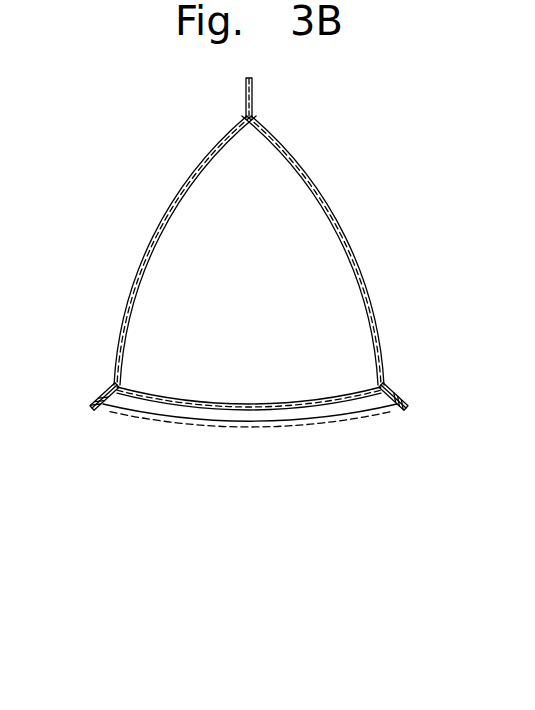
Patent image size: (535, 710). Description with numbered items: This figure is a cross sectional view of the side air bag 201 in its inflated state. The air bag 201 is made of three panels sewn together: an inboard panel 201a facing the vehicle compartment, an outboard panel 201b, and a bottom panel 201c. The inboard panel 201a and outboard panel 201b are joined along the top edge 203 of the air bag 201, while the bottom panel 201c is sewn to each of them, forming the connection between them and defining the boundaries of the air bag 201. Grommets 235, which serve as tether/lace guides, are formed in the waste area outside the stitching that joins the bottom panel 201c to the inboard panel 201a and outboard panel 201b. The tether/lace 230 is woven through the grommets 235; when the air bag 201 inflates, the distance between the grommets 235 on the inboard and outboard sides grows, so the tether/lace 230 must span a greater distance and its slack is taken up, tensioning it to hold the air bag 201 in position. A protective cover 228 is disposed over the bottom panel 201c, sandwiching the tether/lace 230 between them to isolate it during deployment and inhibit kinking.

The air bag 201 is at (250, 244).
The inboard panel 201a is at (343, 237).
The outboard panel 201b is at (153, 240).
The bottom panel 201c is at (247, 402).
The top edge 203 is at (253, 115).
The grommets 235 is at (98, 403).
The protective cover 228 is at (340, 420).
The tether/lace 230 is at (147, 413).